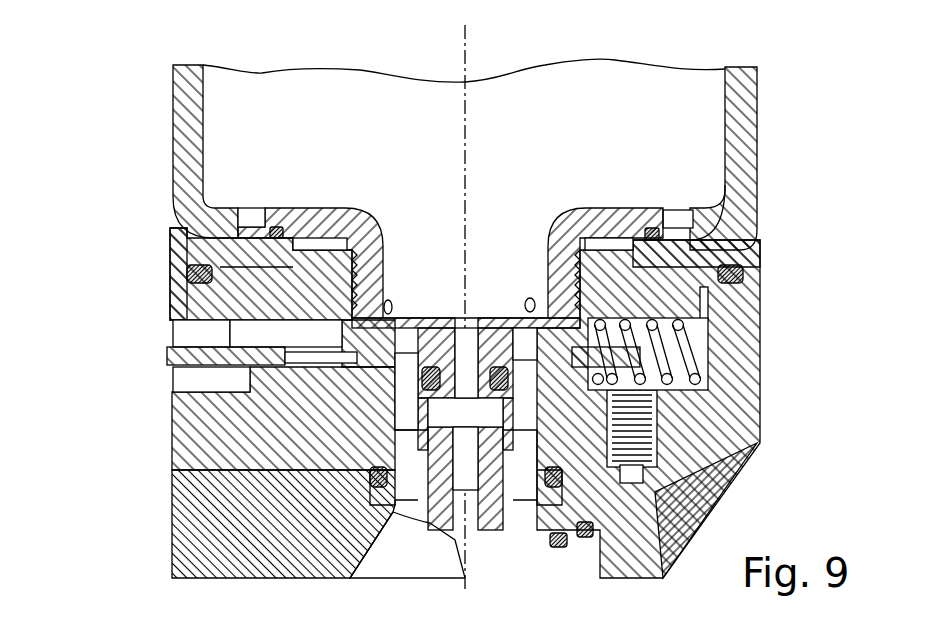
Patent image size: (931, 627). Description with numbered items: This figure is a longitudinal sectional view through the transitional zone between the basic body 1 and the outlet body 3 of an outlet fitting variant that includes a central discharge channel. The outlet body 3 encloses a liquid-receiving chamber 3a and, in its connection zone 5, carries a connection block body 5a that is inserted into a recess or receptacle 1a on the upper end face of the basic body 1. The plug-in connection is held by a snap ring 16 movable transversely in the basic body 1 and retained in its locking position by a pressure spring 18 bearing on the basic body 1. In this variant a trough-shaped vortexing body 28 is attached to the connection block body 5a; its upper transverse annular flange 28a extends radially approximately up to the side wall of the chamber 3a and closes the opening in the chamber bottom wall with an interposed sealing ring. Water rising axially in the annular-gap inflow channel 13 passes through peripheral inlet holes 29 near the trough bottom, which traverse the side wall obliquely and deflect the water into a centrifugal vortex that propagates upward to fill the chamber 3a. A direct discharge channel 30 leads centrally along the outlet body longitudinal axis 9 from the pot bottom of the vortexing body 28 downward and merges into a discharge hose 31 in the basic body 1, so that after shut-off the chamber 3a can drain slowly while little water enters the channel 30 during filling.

The outlet body longitudinal axis 9 is at (465, 50).
The outlet body 3 is at (757, 170).
The liquid-receiving chamber 3a is at (705, 133).
The connection zone 5 is at (243, 295).
The connection block body 5a is at (178, 274).
The recess or receptacle 1a is at (342, 292).
The snap ring 16 is at (190, 358).
The basic body 1 is at (758, 415).
The vortexing body 28 is at (372, 250).
The upper transverse annular flange 28a is at (268, 210).
The peripheral inlet holes 29 is at (525, 305).
The inflow channel 13 is at (403, 400).
The direct discharge channel 30 is at (460, 468).
The pressure spring 18 is at (702, 357).
The discharge hose 31 is at (450, 570).